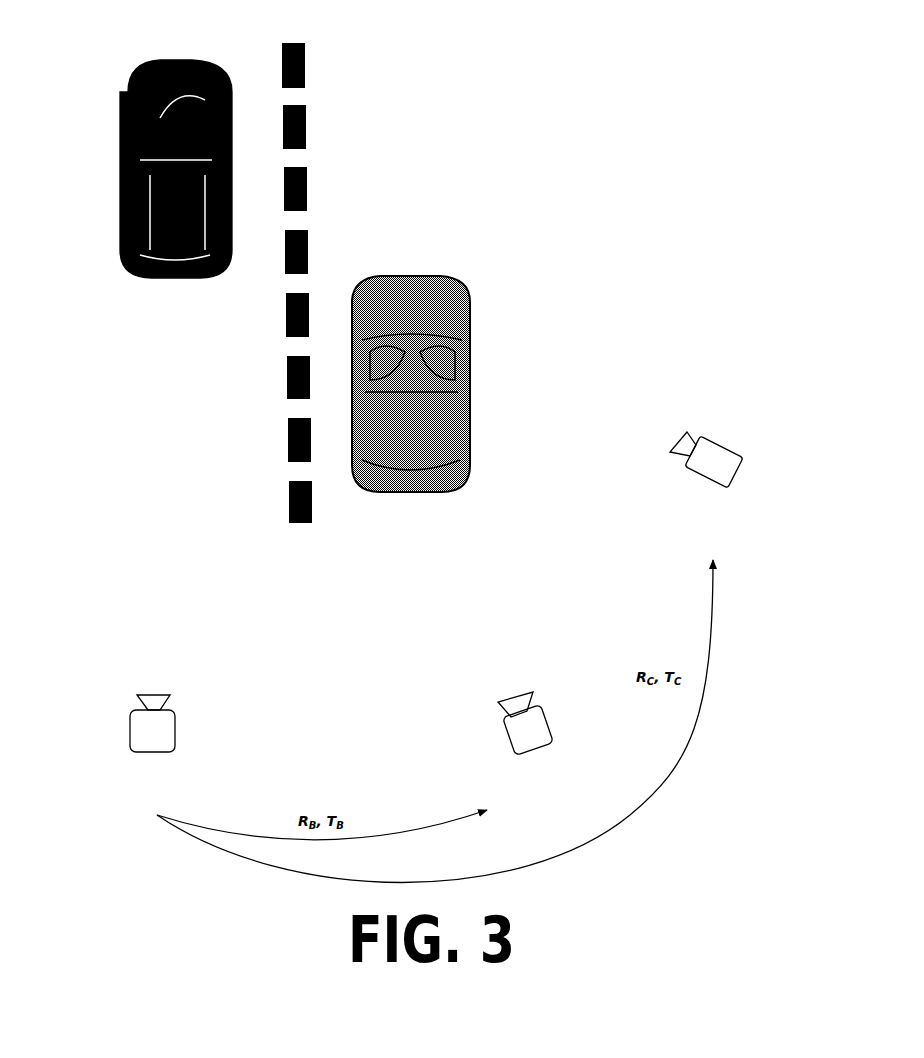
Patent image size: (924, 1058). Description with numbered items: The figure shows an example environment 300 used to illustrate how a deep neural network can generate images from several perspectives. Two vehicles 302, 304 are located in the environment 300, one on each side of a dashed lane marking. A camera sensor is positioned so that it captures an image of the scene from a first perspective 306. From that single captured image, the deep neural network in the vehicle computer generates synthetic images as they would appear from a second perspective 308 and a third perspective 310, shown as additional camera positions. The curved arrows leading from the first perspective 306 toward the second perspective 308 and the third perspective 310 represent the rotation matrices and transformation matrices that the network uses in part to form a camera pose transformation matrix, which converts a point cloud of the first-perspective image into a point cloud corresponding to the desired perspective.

The environment 300 is at (850, 171).
The vehicle 302 is at (122, 100).
The vehicle 304 is at (454, 319).
The first perspective 306 is at (143, 727).
The second perspective 308 is at (527, 731).
The third perspective 310 is at (728, 447).